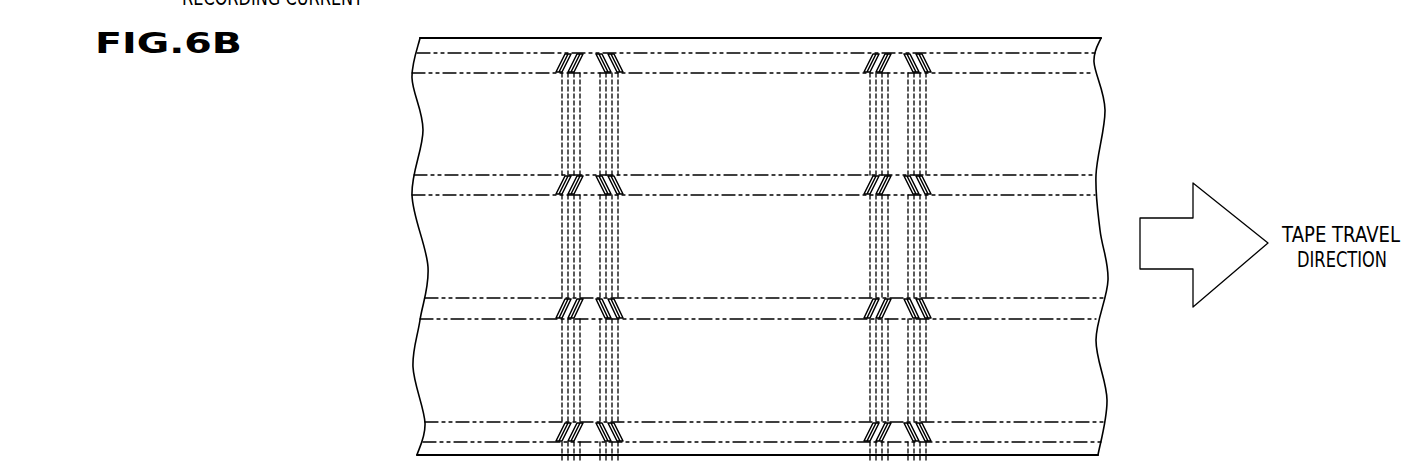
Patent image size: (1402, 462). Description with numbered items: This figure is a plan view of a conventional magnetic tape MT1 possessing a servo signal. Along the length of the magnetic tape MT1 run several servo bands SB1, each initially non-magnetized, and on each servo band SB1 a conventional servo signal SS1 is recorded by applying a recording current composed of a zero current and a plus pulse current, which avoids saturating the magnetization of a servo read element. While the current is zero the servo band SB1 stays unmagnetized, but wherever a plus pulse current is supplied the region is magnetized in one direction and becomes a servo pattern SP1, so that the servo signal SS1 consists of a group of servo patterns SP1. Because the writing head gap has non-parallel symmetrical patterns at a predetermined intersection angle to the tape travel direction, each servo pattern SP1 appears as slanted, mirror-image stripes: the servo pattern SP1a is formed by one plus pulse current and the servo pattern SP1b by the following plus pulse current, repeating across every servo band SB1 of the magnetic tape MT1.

The magnetic tape MT1 is at (1048, 38).
The servo signal SS1 is at (1025, 58).
The servo band SB1 is at (1055, 73).
The servo pattern SP1 is at (557, 50).
The servo pattern SP1a is at (868, 28).
The servo pattern SP1b is at (923, 28).